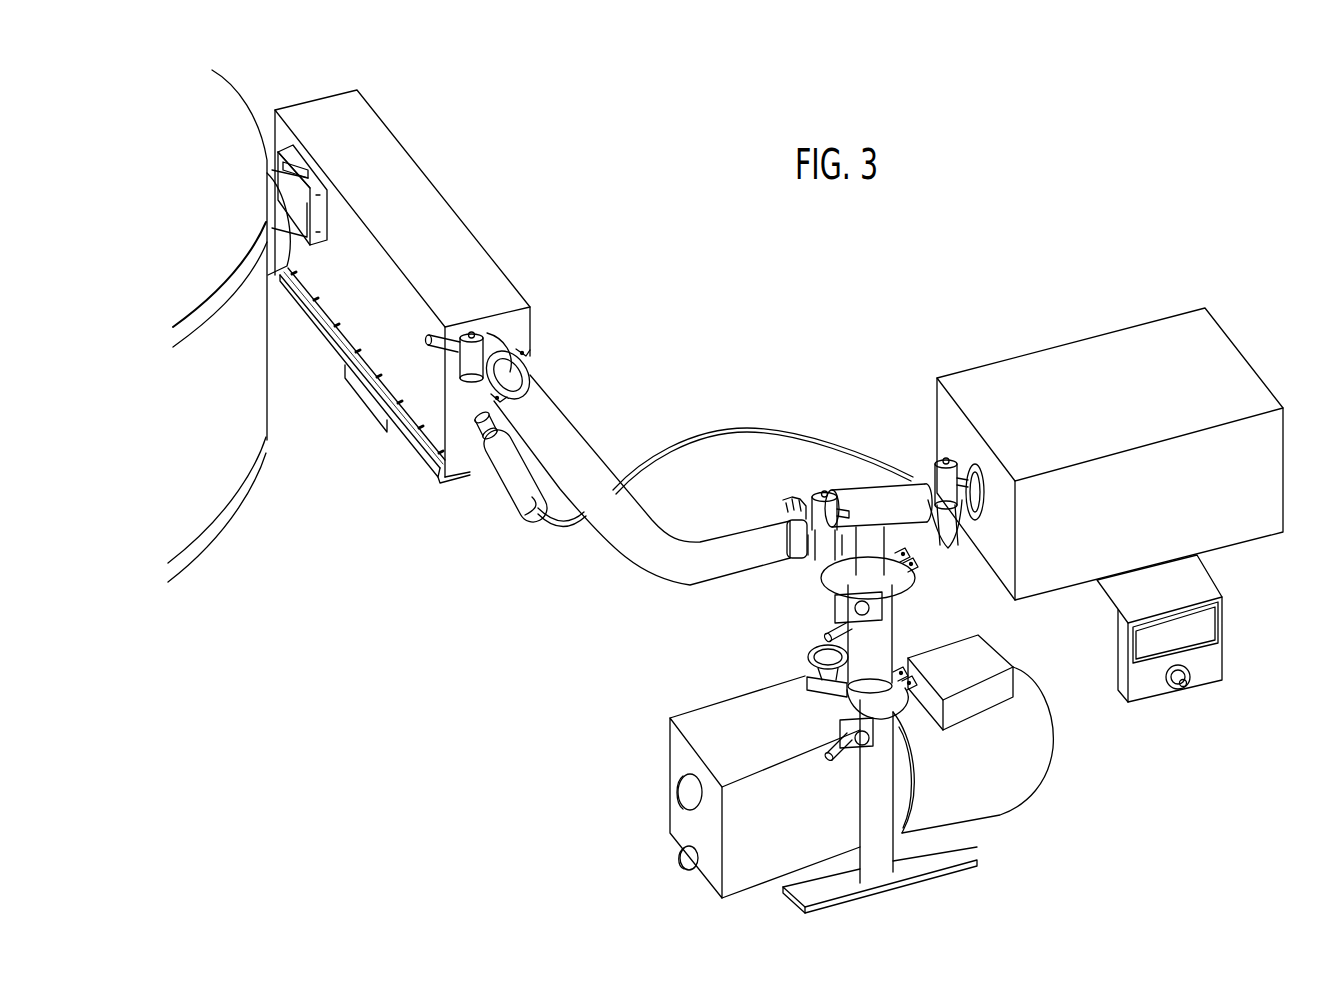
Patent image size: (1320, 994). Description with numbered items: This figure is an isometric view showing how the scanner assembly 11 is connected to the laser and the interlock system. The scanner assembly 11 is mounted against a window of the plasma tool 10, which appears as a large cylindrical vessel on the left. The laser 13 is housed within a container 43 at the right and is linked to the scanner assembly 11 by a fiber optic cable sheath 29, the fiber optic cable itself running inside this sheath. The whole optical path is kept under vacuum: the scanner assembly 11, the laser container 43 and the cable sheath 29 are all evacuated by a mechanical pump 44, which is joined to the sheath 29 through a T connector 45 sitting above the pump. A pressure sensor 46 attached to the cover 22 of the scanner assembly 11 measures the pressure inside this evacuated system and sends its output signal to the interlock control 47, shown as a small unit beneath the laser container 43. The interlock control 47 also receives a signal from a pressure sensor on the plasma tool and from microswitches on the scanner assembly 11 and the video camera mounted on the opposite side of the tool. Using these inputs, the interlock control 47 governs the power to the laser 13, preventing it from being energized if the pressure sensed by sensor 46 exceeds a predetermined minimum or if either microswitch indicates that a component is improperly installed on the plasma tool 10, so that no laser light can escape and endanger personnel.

The plasma tool 10 is at (260, 493).
The scanner assembly 11 is at (401, 286).
The cover 22 is at (475, 233).
The fiber optic cable sheath 29 is at (662, 582).
The pressure sensor 46 is at (503, 498).
The laser 13 is at (1109, 482).
The laser container 43 is at (1250, 358).
The interlock control 47 is at (1226, 655).
The "T" connector 45 is at (857, 500).
The mechanical pump 44 is at (665, 743).